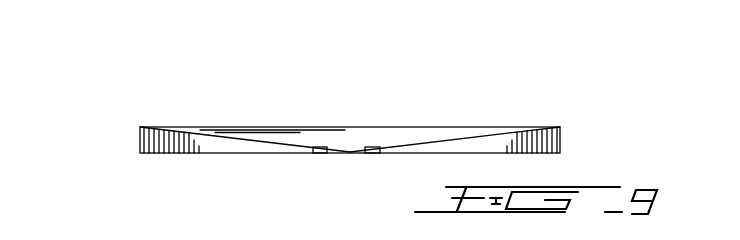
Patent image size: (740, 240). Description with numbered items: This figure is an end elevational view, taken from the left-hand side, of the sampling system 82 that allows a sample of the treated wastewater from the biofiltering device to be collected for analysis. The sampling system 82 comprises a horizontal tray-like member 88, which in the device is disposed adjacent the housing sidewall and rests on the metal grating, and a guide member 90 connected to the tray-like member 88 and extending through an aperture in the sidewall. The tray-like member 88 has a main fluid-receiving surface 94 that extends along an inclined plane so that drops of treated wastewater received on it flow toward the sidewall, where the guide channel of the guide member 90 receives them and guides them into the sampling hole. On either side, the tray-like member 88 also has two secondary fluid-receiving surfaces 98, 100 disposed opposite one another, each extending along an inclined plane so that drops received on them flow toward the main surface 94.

The sampling system 82 is at (562, 135).
The tray-like member 88 is at (153, 145).
The guide member 90 is at (322, 150).
The main fluid-receiving surface 94 is at (353, 140).
The secondary fluid-receiving surface 98 is at (247, 140).
The secondary fluid-receiving surface 100 is at (473, 135).